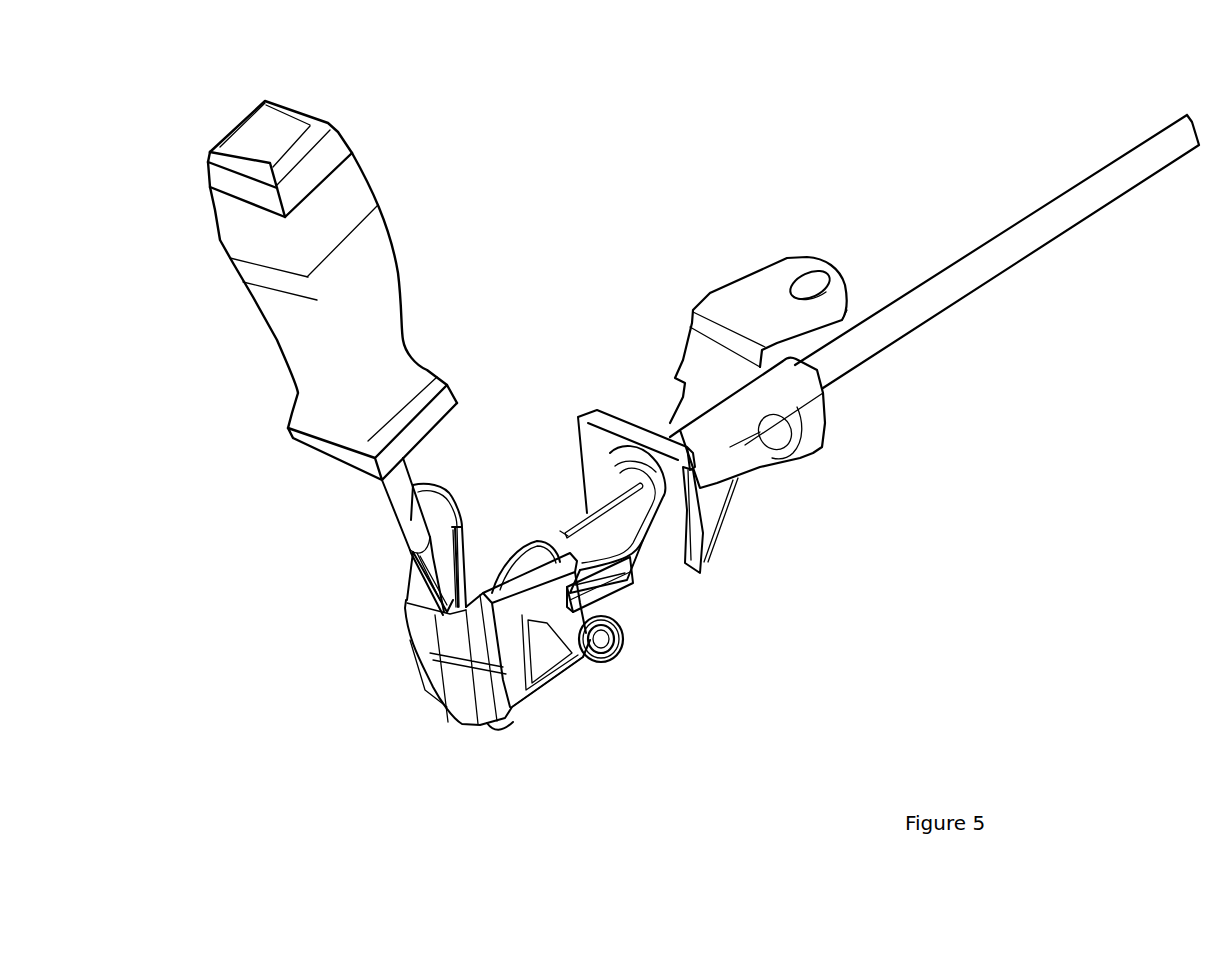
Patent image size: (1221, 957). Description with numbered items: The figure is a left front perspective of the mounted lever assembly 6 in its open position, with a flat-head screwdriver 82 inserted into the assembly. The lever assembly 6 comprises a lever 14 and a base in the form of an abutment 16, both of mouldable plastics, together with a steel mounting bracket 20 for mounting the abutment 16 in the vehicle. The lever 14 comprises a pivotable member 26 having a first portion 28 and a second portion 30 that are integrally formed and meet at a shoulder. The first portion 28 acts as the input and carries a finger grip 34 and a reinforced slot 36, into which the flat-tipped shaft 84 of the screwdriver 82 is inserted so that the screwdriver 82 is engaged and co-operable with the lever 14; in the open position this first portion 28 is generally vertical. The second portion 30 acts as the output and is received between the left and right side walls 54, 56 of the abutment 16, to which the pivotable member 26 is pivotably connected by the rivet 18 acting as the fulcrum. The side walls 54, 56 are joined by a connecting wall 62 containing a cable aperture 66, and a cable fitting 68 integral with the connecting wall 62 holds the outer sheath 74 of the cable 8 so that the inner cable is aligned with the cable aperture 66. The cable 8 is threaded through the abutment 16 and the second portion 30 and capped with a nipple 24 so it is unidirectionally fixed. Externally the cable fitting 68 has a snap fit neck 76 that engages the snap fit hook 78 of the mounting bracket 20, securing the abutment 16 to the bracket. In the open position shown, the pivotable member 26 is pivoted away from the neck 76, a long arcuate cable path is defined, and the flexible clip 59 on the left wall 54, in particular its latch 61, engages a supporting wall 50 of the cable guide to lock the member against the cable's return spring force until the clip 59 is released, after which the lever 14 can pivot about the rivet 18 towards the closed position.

The lever assembly 6 is at (513, 219).
The cable 8 is at (567, 537).
The lever 14 is at (371, 704).
The abutment 16 is at (770, 544).
The rivet 18 is at (626, 652).
The mounting bracket 20 is at (732, 239).
The nipple 24 is at (517, 723).
The pivotable member 26 is at (447, 703).
The first portion 28 is at (372, 641).
The second portion 30 is at (594, 695).
The finger grip 34 is at (449, 462).
The reinforced slot 36 is at (397, 591).
The supporting wall 50 is at (520, 518).
The left side wall 54 is at (660, 593).
The right side wall 56 is at (600, 492).
The flexible clip 59 is at (636, 597).
The latch 61 is at (603, 598).
The connecting wall 62 is at (628, 527).
The cable aperture 66 is at (620, 461).
The cable fitting 68 is at (861, 434).
The outer sheath 74 is at (975, 278).
The snap fit neck 76 is at (663, 409).
The snap fit hook 78 is at (617, 402).
The flat-head screwdriver 82 is at (255, 363).
The flat-tipped shaft 84 is at (393, 487).